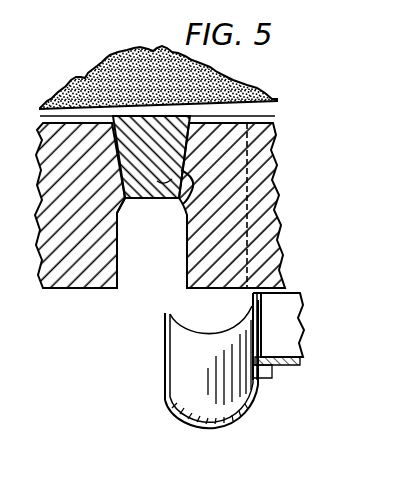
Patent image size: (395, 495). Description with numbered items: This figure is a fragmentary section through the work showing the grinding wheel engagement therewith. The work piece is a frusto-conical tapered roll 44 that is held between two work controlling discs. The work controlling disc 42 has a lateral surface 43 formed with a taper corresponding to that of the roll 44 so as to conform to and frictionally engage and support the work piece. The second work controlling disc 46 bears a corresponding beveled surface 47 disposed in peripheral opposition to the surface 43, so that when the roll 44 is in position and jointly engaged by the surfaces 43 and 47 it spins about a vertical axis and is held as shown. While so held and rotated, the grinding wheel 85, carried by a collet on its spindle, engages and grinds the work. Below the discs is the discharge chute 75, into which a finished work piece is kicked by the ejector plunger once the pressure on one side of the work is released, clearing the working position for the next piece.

The grinding wheel 85 is at (108, 78).
The beveled surface 47 is at (113, 143).
The second work controlling disc 46 is at (52, 186).
The work controlling disc 42 is at (262, 210).
The tapered work-engaging surface 43 is at (178, 210).
The frusto-conical tapered roll 44 is at (157, 199).
The discharge chute 75 is at (232, 405).